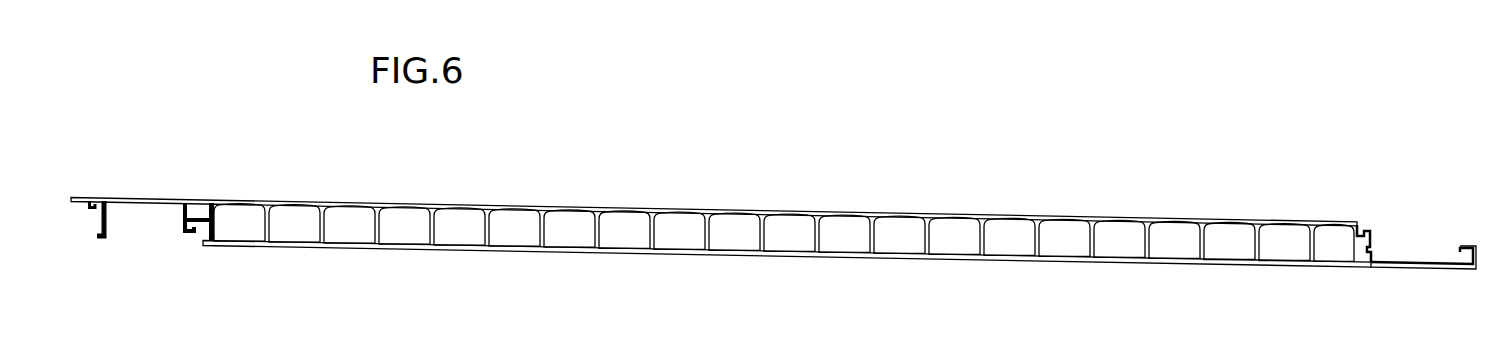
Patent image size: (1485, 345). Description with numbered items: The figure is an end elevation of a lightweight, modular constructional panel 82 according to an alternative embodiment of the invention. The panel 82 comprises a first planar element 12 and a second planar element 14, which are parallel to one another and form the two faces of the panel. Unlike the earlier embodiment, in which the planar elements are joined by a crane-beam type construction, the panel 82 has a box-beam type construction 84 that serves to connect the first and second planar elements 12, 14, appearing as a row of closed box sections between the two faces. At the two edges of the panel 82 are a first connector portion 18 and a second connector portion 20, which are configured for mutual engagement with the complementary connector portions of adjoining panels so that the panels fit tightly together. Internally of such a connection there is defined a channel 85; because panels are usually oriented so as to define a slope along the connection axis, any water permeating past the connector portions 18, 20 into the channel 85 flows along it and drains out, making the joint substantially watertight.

The first planar element 12 is at (474, 205).
The second planar element 14 is at (388, 248).
The first connector portion 18 is at (143, 188).
The second connector portion 20 is at (1397, 233).
The panel 82 is at (870, 193).
The box-beam type construction 84 is at (725, 233).
The channel 85 is at (1422, 233).